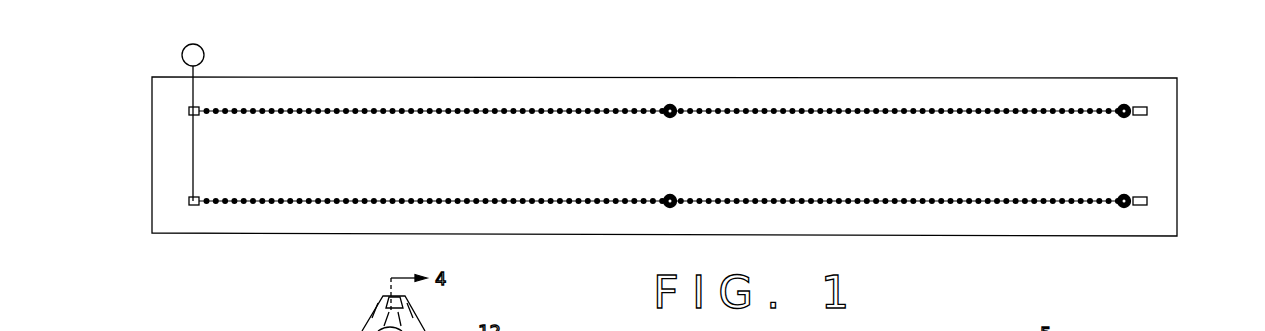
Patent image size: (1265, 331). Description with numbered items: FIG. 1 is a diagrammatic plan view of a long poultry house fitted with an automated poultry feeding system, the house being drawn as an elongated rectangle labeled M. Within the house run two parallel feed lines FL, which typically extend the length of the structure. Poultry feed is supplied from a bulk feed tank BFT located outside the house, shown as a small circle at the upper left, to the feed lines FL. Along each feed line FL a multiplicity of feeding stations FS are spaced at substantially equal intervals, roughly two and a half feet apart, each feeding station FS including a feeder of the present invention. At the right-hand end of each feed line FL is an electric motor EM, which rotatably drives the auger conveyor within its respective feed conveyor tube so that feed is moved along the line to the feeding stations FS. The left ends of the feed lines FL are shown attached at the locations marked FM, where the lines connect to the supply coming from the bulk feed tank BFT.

The mattress M is at (851, 58).
The feed line FL is at (415, 107).
The feeding station FS is at (531, 108).
The electric motor EM is at (1147, 111).
The fastening member FM is at (188, 111).
The bulk feed tank BFT is at (203, 51).